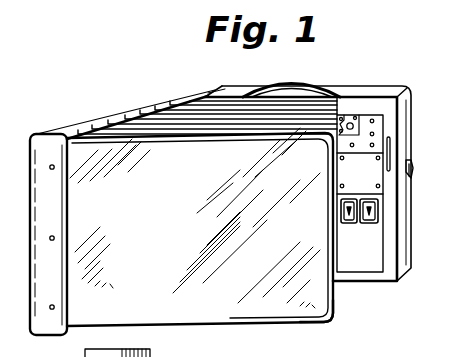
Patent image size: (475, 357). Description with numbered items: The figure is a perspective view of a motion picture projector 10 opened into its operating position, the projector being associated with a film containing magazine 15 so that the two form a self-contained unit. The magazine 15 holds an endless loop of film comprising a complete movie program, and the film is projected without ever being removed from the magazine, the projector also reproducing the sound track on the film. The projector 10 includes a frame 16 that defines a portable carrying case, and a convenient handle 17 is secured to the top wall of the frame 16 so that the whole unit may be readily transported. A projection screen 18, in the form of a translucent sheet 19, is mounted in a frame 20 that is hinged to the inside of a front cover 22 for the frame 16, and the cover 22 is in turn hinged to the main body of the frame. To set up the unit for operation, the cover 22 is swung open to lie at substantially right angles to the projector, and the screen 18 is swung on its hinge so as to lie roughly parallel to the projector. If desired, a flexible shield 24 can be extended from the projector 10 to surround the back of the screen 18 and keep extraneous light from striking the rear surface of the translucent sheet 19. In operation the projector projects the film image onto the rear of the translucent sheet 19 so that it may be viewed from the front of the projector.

The motion picture projector 10 is at (370, 86).
The film containing magazine 15 is at (409, 206).
The frame 16 is at (347, 92).
The handle 17 is at (277, 80).
The projection screen 18 is at (287, 327).
The translucent sheet 19 is at (243, 312).
The frame 20 is at (335, 320).
The front cover 22 is at (77, 123).
The flexible shield 24 is at (160, 128).